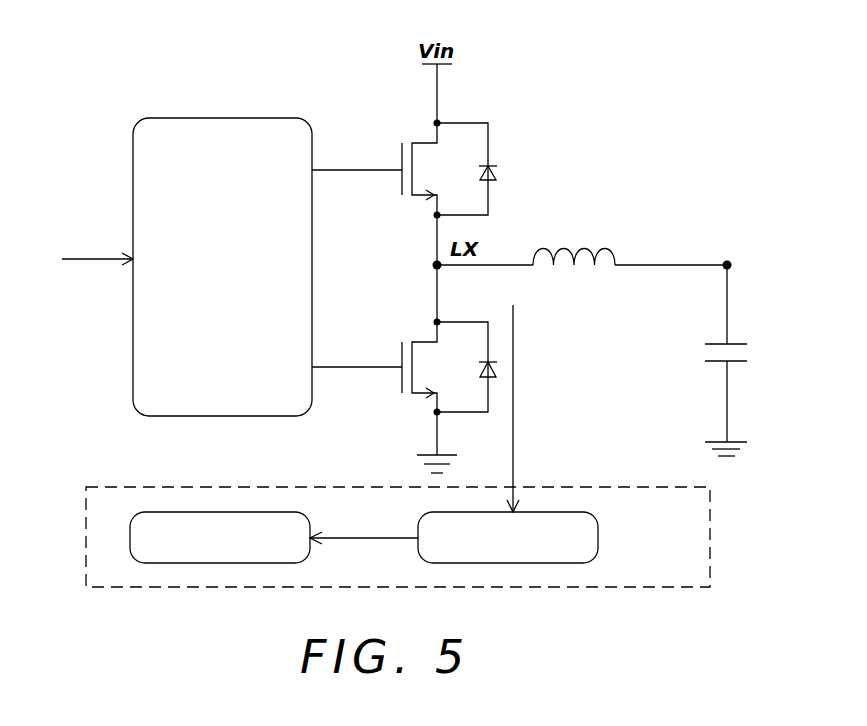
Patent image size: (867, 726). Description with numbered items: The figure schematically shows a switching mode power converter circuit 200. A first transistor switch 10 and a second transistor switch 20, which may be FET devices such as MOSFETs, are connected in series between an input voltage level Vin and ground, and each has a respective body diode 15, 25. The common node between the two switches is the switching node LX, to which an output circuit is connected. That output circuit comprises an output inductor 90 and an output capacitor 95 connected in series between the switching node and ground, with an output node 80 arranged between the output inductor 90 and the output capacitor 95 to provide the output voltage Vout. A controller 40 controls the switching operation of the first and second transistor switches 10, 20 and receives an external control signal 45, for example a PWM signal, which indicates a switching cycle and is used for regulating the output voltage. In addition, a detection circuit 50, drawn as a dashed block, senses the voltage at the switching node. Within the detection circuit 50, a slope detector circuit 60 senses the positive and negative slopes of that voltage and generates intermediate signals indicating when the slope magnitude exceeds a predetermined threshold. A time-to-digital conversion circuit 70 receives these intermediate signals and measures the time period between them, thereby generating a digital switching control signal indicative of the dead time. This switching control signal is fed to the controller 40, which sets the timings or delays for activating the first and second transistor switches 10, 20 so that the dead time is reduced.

The switching mode power converter circuit 200 is at (226, 56).
The first transistor switch 10 is at (402, 152).
The body diode 15 is at (498, 168).
The second transistor switch 20 is at (402, 350).
The body diode 25 is at (503, 367).
The controller 40 is at (206, 416).
The external control signal 45 is at (80, 259).
The detection circuit 50 is at (348, 487).
The slope detector circuit 60 is at (562, 512).
The time-to-digital conversion circuit 70 is at (246, 512).
The output node 80 is at (730, 253).
The output inductor 90 is at (596, 235).
The output capacitor 95 is at (752, 351).